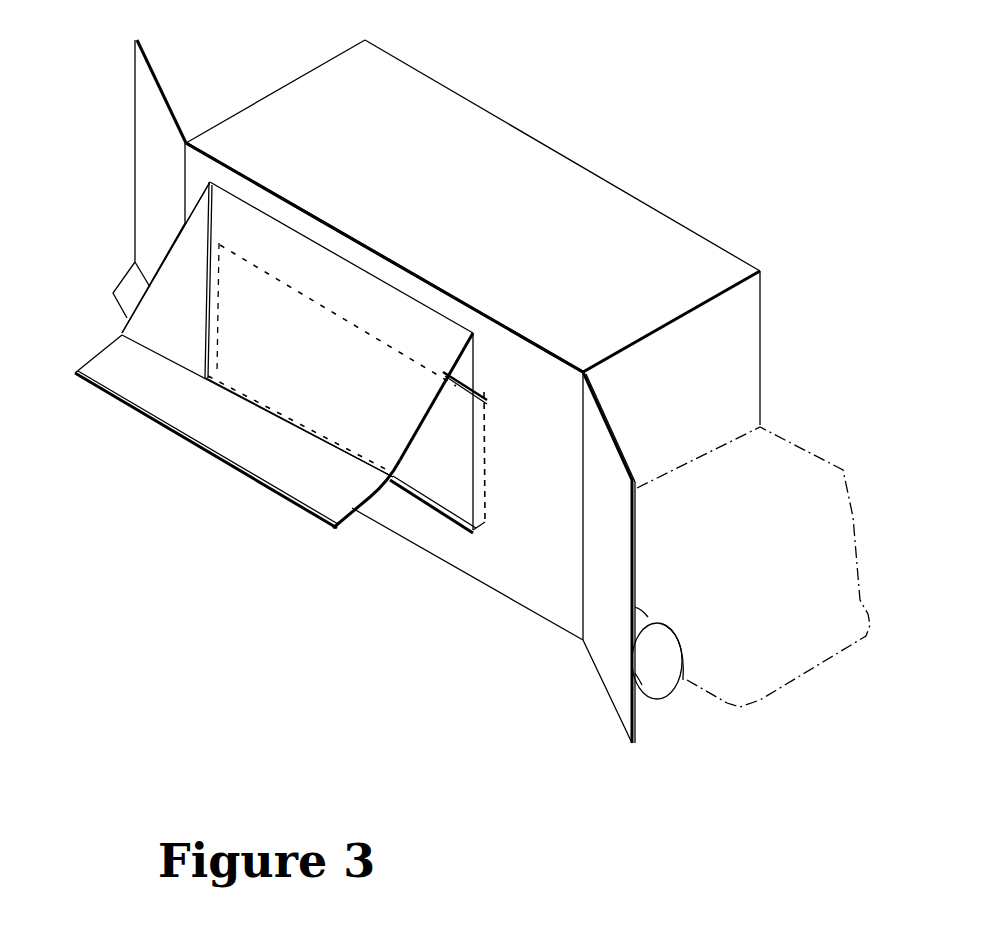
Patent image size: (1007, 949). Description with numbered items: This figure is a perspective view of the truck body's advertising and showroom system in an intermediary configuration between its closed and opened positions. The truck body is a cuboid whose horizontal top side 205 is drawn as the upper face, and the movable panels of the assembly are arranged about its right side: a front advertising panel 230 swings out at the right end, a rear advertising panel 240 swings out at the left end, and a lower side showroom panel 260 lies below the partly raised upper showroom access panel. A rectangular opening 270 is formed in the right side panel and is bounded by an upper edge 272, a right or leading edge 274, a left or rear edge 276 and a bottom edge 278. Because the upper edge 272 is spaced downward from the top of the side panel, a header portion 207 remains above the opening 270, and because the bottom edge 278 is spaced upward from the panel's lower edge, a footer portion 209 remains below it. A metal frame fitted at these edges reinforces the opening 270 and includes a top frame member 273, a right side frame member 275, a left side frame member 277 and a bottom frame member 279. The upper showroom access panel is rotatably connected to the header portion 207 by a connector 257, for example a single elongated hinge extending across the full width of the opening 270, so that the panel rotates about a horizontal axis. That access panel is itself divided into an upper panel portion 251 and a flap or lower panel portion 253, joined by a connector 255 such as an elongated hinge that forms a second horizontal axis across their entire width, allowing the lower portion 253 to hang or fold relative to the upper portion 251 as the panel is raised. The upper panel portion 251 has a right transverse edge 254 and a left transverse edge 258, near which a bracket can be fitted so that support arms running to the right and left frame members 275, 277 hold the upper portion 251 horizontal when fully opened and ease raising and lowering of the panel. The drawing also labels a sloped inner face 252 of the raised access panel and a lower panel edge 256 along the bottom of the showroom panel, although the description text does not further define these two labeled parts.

The top side 205 is at (463, 127).
The header portion 207 is at (418, 288).
The footer portion 209 is at (432, 530).
The front advertising panel 230 is at (586, 654).
The rear advertising panel 240 is at (135, 160).
The upper panel portion 251 is at (162, 297).
The inclined tray panel 252 is at (452, 323).
The lower panel portion 253 is at (330, 500).
The right transverse edge 254 is at (425, 427).
The connector 255 is at (163, 360).
The bottom panel 256 is at (227, 465).
The connector 257 is at (372, 275).
The left transverse edge 258 is at (168, 257).
The lower side showroom panel 260 is at (445, 457).
The opening 270 is at (485, 376).
The upper edge 272 is at (298, 250).
The top frame member 273 is at (350, 263).
The right edge 274 is at (485, 354).
The right side frame member 275 is at (473, 410).
The left edge 276 is at (226, 211).
The left side frame member 277 is at (213, 232).
The bottom edge 278 is at (326, 425).
The bottom frame member 279 is at (270, 410).